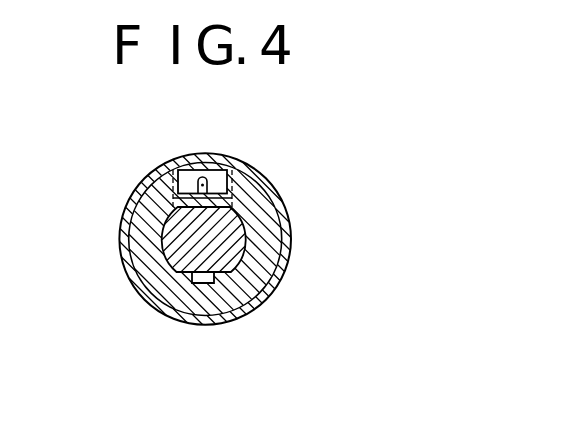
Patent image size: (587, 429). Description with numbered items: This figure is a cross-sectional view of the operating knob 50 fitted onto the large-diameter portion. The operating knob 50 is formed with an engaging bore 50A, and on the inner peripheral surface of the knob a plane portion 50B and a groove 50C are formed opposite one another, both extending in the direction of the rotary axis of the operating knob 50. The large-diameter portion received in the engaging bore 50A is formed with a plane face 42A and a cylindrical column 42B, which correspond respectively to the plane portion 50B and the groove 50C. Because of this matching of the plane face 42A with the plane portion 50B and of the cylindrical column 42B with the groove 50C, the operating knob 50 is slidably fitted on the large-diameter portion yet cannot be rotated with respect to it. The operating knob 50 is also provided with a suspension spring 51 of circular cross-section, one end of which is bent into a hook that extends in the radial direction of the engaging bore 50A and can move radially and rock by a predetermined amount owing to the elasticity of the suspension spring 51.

The operating knob 50 is at (279, 222).
The engaging bore 50A is at (165, 231).
The plane portion 50B is at (170, 201).
The groove 50C is at (213, 283).
The plane face 42A is at (216, 171).
The cylindrical column 42B is at (201, 280).
The suspension spring 51 is at (202, 177).